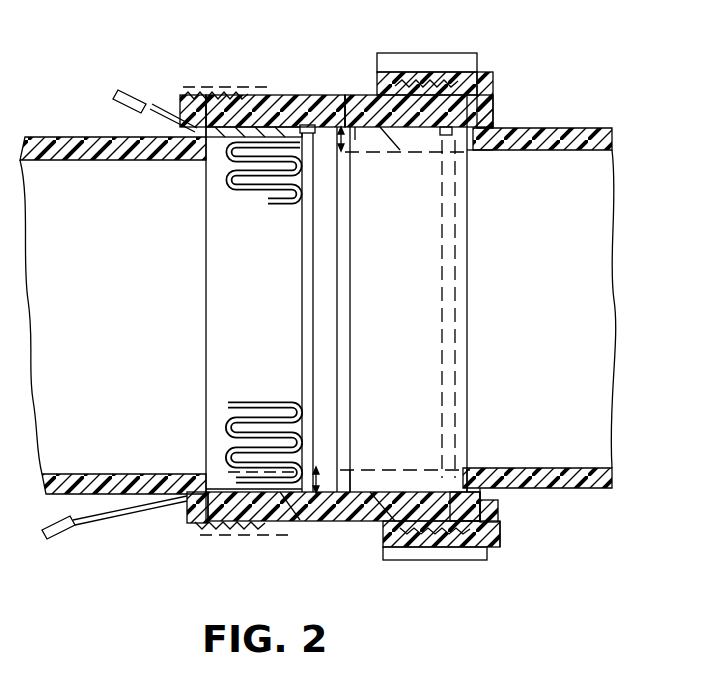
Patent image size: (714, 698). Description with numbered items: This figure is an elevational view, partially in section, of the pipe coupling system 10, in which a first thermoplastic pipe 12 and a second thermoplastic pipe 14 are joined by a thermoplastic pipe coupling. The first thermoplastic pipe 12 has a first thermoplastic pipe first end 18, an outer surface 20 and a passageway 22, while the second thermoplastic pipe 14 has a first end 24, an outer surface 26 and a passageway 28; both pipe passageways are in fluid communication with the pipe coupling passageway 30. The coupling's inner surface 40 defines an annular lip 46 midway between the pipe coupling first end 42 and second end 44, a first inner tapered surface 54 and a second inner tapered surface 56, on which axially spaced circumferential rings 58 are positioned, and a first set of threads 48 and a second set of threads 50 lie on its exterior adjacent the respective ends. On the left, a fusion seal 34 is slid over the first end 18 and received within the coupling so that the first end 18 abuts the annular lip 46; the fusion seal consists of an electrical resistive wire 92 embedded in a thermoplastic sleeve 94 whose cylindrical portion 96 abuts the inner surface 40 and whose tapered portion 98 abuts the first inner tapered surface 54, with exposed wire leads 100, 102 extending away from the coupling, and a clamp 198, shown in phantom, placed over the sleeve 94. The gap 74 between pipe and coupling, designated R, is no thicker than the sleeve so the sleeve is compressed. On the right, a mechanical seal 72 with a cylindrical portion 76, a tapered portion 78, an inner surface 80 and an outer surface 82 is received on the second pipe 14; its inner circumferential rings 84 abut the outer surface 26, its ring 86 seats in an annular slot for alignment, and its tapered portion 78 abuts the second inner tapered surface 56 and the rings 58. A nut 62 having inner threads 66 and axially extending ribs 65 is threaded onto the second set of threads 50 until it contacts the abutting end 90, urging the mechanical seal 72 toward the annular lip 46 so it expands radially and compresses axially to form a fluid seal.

The pipe coupling system 10 is at (524, 582).
The first thermoplastic pipe 12 is at (55, 494).
The second thermoplastic pipe 14 is at (577, 128).
The first thermoplastic pipe first end 18 is at (302, 356).
The first thermoplastic pipe outer surface 20 is at (100, 494).
The first thermoplastic pipe passageway 22 is at (78, 305).
The second thermoplastic pipe first end 24 is at (351, 300).
The second thermoplastic pipe outer surface 26 is at (583, 488).
The second thermoplastic pipe passageway 28 is at (546, 303).
The pipe coupling passageway 30 is at (330, 292).
The fusion seal 34 is at (197, 127).
The pipe coupling inner surface 40 is at (398, 130).
The pipe coupling first end 42 is at (190, 96).
The pipe coupling second end 44 is at (490, 98).
The annular lip 46 is at (352, 470).
The first set of threads 48 is at (236, 96).
The second set of threads 50 is at (438, 95).
The first inner tapered surface 54 is at (195, 524).
The second inner tapered surface 56 is at (475, 492).
The circumferential rings 58 is at (220, 96).
The nut 62 is at (392, 545).
The axially extending ribs 65 is at (440, 560).
The inner threads 66 is at (482, 540).
The mechanical seal 72 is at (488, 155).
The gap 74 is at (357, 135).
The cylindrical portion 76 is at (388, 500).
The tapered portion 78 is at (500, 504).
The inner surface 80 is at (468, 470).
The outer surface 82 is at (362, 95).
The inner circumferential rings 84 is at (228, 512).
The ring 86 is at (455, 135).
The abutting end 90 is at (472, 112).
The electrical resistive wire 92 is at (228, 406).
The thermoplastic sleeve 94 is at (212, 135).
The cylindrical portion 96 is at (300, 112).
The tapered portion 98 is at (206, 155).
The electrical resistive wire lead 100 is at (118, 96).
The electrical resistive wire lead 102 is at (115, 540).
The clamp 198 is at (220, 540).